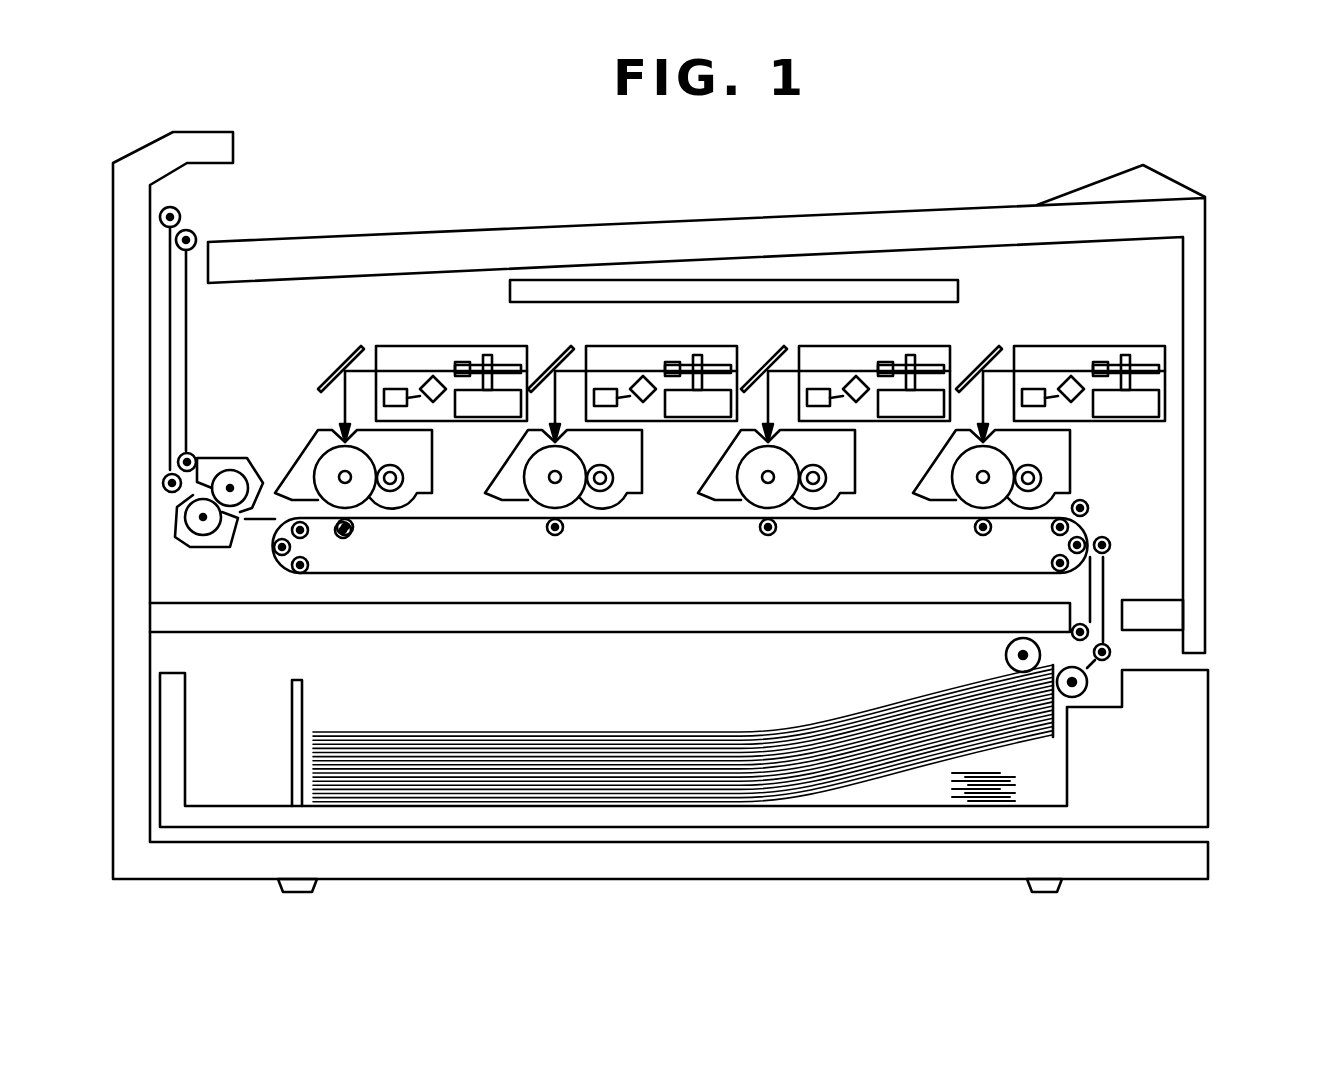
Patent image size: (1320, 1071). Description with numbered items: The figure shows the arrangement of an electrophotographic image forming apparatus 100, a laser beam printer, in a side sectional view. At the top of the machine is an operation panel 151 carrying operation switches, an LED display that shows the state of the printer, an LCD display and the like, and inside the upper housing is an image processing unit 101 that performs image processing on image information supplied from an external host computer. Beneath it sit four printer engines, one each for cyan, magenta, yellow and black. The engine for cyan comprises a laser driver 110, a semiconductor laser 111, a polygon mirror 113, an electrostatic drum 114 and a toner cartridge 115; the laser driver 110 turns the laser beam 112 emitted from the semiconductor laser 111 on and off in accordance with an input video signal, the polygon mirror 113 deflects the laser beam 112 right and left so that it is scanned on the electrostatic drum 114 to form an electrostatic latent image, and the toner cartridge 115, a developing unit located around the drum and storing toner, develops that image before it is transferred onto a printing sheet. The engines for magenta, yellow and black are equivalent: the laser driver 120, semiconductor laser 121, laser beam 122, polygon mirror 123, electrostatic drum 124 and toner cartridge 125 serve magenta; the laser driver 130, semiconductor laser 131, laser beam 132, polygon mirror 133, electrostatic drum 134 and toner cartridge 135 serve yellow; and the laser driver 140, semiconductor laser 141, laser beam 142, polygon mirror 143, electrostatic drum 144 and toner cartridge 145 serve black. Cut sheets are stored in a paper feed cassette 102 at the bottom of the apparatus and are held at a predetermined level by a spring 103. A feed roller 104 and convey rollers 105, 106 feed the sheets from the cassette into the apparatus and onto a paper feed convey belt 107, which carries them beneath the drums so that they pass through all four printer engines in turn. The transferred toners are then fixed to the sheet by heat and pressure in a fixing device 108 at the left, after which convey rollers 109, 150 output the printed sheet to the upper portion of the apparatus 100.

The image forming apparatus 100 is at (1208, 303).
The image processing unit 101 is at (960, 292).
The paper feed cassette 102 is at (1192, 715).
The spring 103 is at (1013, 783).
The feed roller 104 is at (1005, 655).
The convey roller 105 is at (1113, 647).
The convey roller 106 is at (1113, 538).
The paper feed convey belt 107 is at (795, 519).
The fixing device 108 is at (173, 523).
The convey roller 109 is at (162, 481).
The laser driver 110 is at (1060, 374).
The semiconductor laser 111 is at (1086, 431).
The laser beam 112 is at (1088, 342).
The polygon mirror 113 is at (1132, 362).
The electrostatic drum 114 is at (958, 502).
The toner cartridge 115 is at (1032, 469).
The laser driver 120 is at (845, 376).
The semiconductor laser 121 is at (871, 431).
The laser beam 122 is at (865, 355).
The polygon mirror 123 is at (920, 362).
The electrostatic drum 124 is at (742, 502).
The toner cartridge 125 is at (803, 471).
The laser driver 130 is at (632, 376).
The semiconductor laser 131 is at (658, 431).
The laser beam 132 is at (650, 355).
The polygon mirror 133 is at (705, 362).
The electrostatic drum 134 is at (529, 502).
The toner cartridge 135 is at (591, 471).
The laser driver 140 is at (393, 389).
The semiconductor laser 141 is at (437, 402).
The laser beam 142 is at (430, 376).
The polygon mirror 143 is at (463, 365).
The electrostatic drum 144 is at (325, 477).
The toner cartridge 145 is at (420, 468).
The convey roller 150 is at (200, 232).
The operation panel 151 is at (1168, 178).